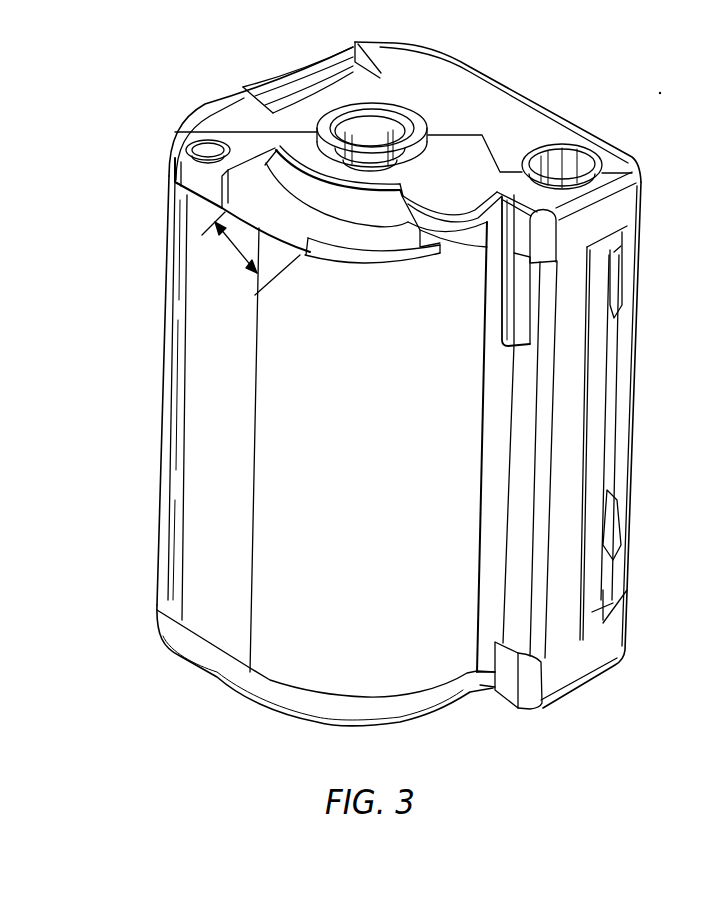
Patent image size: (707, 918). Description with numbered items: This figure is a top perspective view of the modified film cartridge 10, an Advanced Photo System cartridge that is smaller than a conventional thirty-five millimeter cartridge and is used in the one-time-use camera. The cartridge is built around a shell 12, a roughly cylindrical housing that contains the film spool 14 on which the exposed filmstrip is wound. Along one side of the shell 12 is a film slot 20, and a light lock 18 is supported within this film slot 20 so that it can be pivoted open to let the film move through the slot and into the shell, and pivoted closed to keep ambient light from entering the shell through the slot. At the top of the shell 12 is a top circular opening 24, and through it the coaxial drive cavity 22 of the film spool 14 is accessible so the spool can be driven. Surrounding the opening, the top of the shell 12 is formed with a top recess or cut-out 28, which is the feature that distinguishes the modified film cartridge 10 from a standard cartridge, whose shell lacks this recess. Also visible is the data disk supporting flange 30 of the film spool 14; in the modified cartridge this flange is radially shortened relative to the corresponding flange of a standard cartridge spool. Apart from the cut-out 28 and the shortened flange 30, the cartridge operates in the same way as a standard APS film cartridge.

The modified film cartridge 10 is at (439, 722).
The shell 12 is at (344, 499).
The film spool 14 is at (306, 88).
The light lock 18 is at (603, 623).
The film slot 20 is at (614, 570).
The drive cavity 22 is at (367, 158).
The top circular opening 24 is at (408, 108).
The top recess or cut-out 28 is at (238, 250).
The data disk supporting flange 30 is at (363, 213).